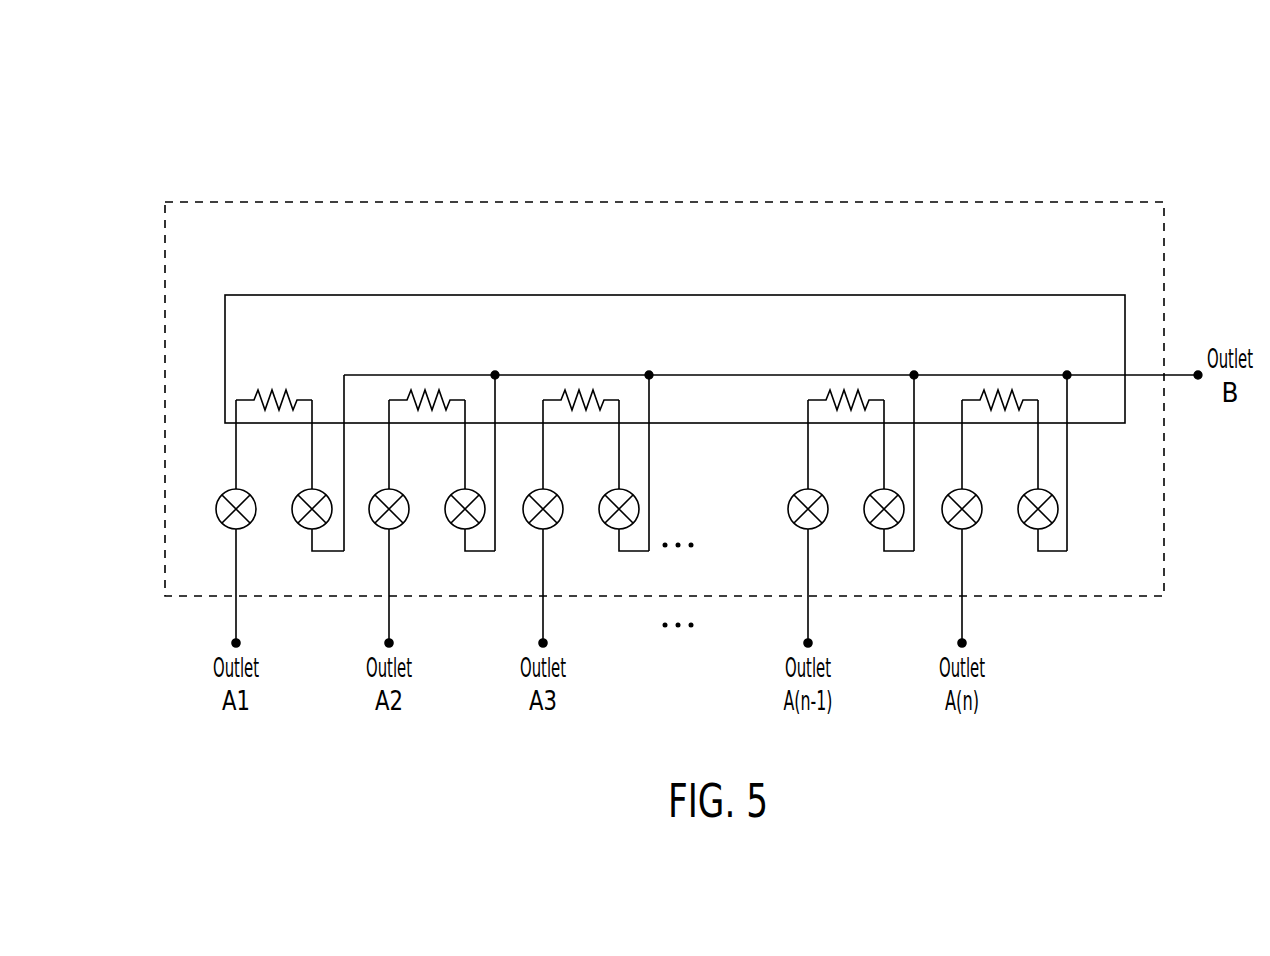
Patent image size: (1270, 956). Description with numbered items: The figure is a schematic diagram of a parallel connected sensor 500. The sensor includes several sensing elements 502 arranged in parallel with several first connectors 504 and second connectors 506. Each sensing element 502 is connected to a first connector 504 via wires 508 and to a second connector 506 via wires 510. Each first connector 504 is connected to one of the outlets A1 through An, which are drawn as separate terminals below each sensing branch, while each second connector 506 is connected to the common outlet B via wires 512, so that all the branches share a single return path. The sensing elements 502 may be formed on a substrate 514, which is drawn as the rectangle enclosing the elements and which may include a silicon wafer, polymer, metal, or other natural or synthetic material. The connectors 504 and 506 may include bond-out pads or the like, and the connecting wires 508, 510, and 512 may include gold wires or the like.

The parallel connected sensor 500 is at (212, 126).
The sensing element 502 is at (272, 392).
The first connector 504 is at (243, 531).
The second connector 506 is at (305, 531).
The wires 508 is at (236, 455).
The wires 510 is at (312, 456).
The wires 512 is at (497, 400).
The substrate 514 is at (714, 305).